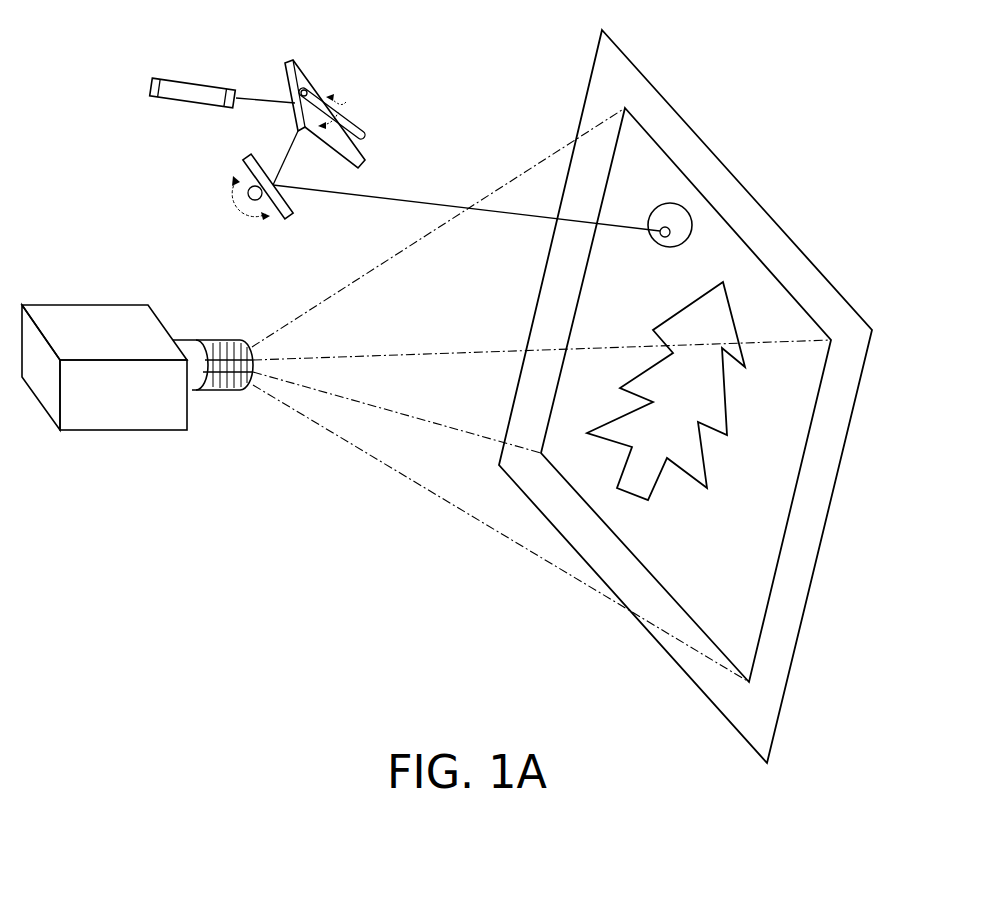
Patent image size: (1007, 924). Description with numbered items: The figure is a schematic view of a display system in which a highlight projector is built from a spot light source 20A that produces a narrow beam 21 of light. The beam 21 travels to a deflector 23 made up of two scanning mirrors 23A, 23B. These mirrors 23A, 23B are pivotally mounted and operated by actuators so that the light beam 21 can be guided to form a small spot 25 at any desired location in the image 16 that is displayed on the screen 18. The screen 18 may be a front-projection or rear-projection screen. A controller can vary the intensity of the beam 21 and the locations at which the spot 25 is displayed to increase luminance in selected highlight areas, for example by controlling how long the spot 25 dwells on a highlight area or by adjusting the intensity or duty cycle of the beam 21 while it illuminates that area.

The spot light source 20A is at (190, 82).
The narrow beam 21 is at (258, 97).
The deflector 23 is at (370, 56).
The scanning mirror 23A is at (350, 101).
The scanning mirror 23B is at (286, 217).
The screen 18 is at (617, 75).
The image 16 is at (648, 163).
The spot 25 is at (670, 212).